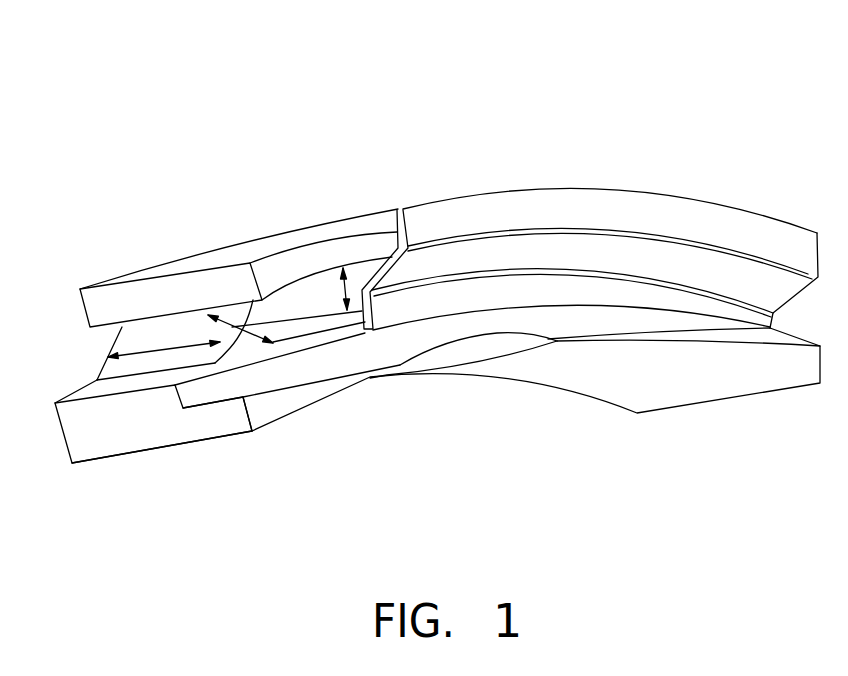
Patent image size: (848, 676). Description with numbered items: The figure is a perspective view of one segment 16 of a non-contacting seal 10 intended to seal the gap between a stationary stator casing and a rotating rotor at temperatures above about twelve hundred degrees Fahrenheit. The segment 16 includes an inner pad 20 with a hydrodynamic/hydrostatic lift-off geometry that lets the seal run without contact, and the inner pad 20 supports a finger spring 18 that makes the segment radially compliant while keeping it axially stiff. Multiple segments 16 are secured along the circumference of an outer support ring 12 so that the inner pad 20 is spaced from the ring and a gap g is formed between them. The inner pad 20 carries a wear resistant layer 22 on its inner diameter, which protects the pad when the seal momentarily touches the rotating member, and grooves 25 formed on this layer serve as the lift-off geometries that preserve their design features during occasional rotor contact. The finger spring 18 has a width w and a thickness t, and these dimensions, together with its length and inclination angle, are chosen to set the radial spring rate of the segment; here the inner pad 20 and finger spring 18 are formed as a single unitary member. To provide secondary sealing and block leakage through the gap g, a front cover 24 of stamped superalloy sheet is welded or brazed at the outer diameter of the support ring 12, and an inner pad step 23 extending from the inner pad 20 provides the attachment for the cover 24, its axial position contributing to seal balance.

The non-contacting seal 10 is at (132, 456).
The outer support ring 12 is at (238, 249).
The segment 16 is at (545, 137).
The finger spring 18 is at (167, 329).
The inner pad 20 is at (70, 418).
The wear resistant layer 22 is at (682, 382).
The inner pad step 23 is at (205, 382).
The front cover 24 is at (637, 214).
The grooves 25 is at (497, 347).
The gap g is at (344, 293).
The width w is at (118, 356).
The thickness t is at (233, 320).